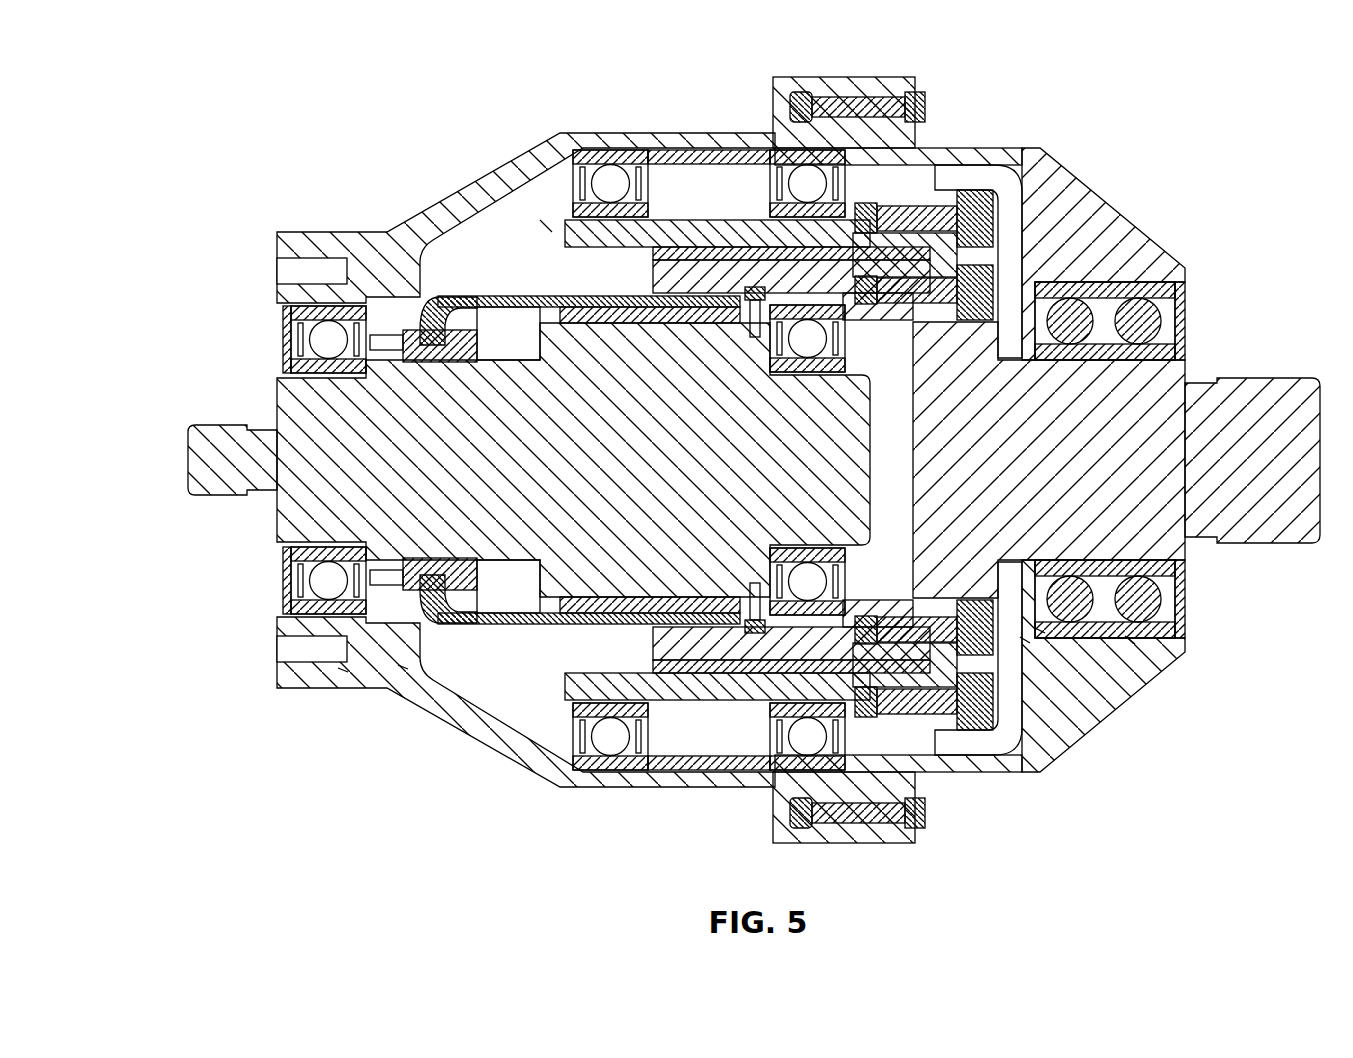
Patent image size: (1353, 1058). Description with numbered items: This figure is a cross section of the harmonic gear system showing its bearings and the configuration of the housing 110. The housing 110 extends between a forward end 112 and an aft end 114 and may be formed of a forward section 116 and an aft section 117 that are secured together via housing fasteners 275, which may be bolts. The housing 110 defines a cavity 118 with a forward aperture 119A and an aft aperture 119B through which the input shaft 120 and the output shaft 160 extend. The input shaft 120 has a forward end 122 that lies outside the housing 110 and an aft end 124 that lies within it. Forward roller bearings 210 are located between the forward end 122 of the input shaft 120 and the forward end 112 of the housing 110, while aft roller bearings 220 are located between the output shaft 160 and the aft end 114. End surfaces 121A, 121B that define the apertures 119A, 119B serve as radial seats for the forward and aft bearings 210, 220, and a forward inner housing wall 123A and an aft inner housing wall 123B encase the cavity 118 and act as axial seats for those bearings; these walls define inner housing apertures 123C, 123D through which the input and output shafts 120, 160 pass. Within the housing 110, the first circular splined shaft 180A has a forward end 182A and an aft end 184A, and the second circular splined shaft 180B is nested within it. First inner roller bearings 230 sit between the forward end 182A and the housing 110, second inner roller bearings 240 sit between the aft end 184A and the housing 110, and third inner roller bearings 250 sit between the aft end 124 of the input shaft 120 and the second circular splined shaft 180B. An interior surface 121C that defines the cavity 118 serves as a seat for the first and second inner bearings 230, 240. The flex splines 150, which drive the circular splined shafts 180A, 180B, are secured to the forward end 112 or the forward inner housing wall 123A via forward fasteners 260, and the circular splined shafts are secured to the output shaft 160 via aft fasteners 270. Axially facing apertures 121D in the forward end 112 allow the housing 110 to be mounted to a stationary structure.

The housing 110 is at (343, 230).
The forward end of the housing 112 is at (303, 677).
The aft end of the housing 114 is at (1163, 667).
The forward section of the housing 116 is at (307, 252).
The aft section of the housing 117 is at (1107, 222).
The cavity 118 is at (900, 460).
The forward aperture 119A is at (297, 627).
The aft aperture 119B is at (1130, 640).
The input shaft 120 is at (213, 445).
The end surface 121A is at (307, 304).
The end surface 121B is at (1117, 280).
The interior surface 121C is at (552, 158).
The axially facing apertures 121D is at (287, 272).
The forward end of the input shaft 122 is at (300, 512).
The forward inner housing wall 123A is at (403, 667).
The aft inner housing wall 123B is at (1025, 640).
The inner housing aperture 123C is at (343, 670).
The inner housing aperture 123D is at (1040, 630).
The aft end of the input shaft 124 is at (743, 280).
The flex splines 150 is at (485, 297).
The output shaft 160 is at (1278, 517).
The first circular splined shaft 180A is at (670, 225).
The second circular splined shaft 180B is at (807, 350).
The forward end of the first circular splined shaft 182A is at (545, 226).
The aft end of the first circular splined shaft 184A is at (895, 240).
The forward roller bearings 210 is at (313, 580).
The aft roller bearings 220 is at (1147, 590).
The first inner roller bearings 230 is at (598, 760).
The second inner roller bearings 240 is at (817, 787).
The third inner roller bearings 250 is at (780, 612).
The forward fasteners 260 is at (408, 252).
The aft fasteners 270 is at (1017, 175).
The housing fasteners 275 is at (920, 95).